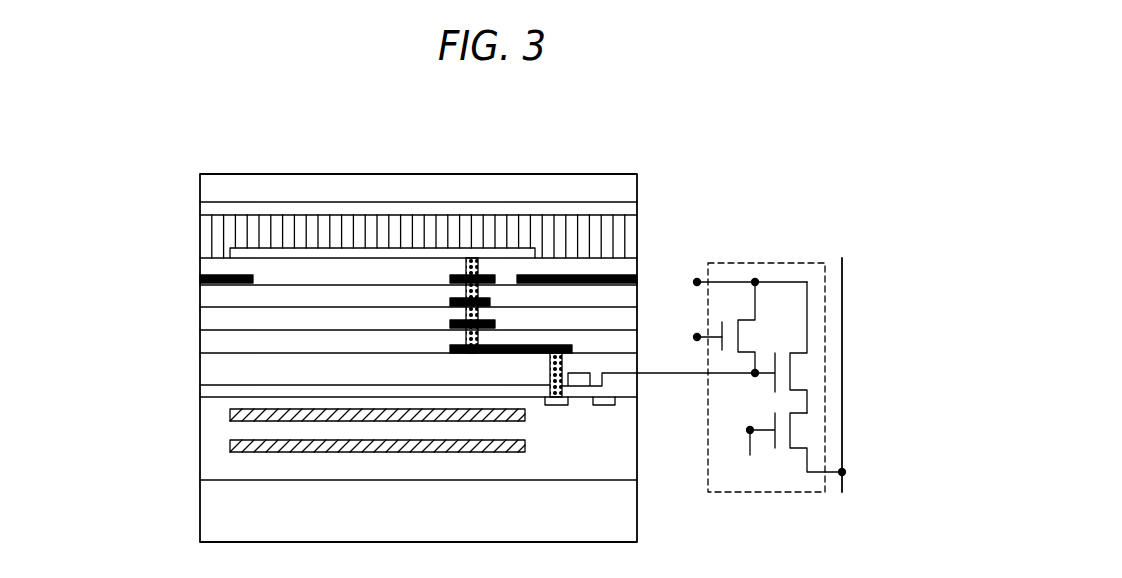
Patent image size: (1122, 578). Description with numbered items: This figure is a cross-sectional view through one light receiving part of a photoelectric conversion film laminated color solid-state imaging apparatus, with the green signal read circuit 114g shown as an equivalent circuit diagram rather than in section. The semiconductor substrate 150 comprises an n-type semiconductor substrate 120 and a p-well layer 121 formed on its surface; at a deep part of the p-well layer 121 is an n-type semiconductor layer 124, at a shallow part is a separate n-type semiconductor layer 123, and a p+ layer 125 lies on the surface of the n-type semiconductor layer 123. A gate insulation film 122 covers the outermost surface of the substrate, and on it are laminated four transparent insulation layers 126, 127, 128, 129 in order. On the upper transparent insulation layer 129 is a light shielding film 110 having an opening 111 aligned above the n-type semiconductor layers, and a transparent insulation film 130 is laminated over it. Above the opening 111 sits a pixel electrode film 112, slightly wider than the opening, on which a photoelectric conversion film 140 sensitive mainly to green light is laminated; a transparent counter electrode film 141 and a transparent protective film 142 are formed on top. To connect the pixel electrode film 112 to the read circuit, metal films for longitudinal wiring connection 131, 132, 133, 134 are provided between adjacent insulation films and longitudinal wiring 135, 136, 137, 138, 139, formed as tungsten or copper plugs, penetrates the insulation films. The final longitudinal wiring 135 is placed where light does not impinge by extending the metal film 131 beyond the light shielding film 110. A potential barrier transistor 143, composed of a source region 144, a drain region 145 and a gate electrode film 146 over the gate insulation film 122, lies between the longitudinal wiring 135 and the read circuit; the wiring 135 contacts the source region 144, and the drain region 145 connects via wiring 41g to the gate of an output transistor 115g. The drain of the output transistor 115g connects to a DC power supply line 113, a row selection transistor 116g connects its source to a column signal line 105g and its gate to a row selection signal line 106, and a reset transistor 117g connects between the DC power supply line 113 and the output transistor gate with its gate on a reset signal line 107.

The wiring 41g is at (658, 375).
The column signal line 105g is at (842, 477).
The row selection signal line 106 is at (751, 458).
The reset signal line 107 is at (697, 337).
The light shielding film 110 is at (200, 277).
The opening 111 is at (255, 280).
The pixel electrode film 112 is at (360, 250).
The DC power supply line 113 is at (697, 280).
The signal read circuit 114g is at (787, 262).
The output transistor 115g is at (793, 372).
The row selection transistor 116g is at (793, 430).
The reset transistor 117g is at (745, 332).
The n-type semiconductor substrate 120 is at (636, 534).
The p-well layer 121 is at (634, 468).
The gate insulation film 122 is at (232, 400).
The n-type semiconductor layer 123 is at (232, 425).
The n-type semiconductor layer 124 is at (232, 453).
The p+ layer 125 is at (398, 403).
The transparent insulation layer 126 is at (212, 373).
The transparent insulation layer 127 is at (203, 353).
The transparent insulation layer 128 is at (203, 315).
The transparent insulation layer 129 is at (203, 293).
The transparent insulation film 130 is at (205, 263).
The metal film for longitudinal wiring connection 131 is at (565, 347).
The metal film for longitudinal wiring connection 132 is at (495, 318).
The metal film for longitudinal wiring connection 133 is at (492, 300).
The metal film for longitudinal wiring connection 134 is at (496, 275).
The longitudinal wiring 135 is at (548, 360).
The longitudinal wiring 136 is at (450, 345).
The longitudinal wiring 137 is at (205, 333).
The longitudinal wiring 138 is at (203, 308).
The longitudinal wiring 139 is at (462, 266).
The photoelectric conversion film 140 is at (260, 225).
The counter electrode film 141 is at (203, 209).
The transparent protective film 142 is at (227, 183).
The potential barrier transistor 143 is at (583, 403).
The source region 144 is at (557, 407).
The drain region 145 is at (603, 413).
The gate electrode film 146 is at (580, 373).
The semiconductor substrate 150 is at (695, 465).